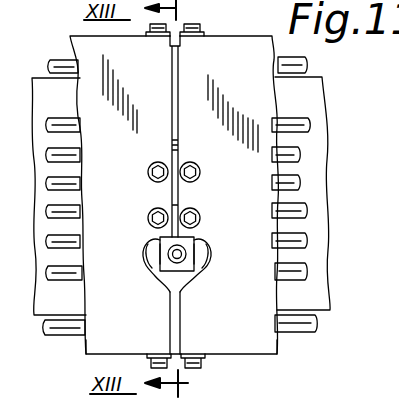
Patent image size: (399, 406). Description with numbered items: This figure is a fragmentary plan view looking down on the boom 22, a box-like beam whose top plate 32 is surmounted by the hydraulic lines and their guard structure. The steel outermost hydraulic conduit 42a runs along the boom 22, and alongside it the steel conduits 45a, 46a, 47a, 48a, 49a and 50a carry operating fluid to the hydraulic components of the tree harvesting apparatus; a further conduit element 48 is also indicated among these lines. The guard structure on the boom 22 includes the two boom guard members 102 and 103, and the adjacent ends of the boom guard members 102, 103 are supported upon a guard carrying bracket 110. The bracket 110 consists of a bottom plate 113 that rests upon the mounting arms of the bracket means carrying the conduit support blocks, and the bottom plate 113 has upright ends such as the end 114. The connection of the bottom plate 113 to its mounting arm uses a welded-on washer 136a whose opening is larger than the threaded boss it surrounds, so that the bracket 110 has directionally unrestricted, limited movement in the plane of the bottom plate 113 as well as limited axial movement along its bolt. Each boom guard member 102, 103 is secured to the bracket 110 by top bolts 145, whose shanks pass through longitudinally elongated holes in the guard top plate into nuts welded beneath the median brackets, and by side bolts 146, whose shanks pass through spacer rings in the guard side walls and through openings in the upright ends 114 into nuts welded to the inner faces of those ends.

The boom 22 is at (42, 78).
The top plate 32 is at (324, 102).
The outermost hydraulic conduit 42a is at (316, 324).
The conduit 45a is at (306, 268).
The conduit 46a is at (306, 238).
The conduit 47a is at (306, 209).
The conduit 48a is at (299, 180).
The conduit 49a is at (299, 152).
The conduit 50a is at (309, 123).
The fin plate 48 is at (391, 19).
The boom guard member 102 is at (88, 358).
The boom guard member 103 is at (280, 346).
The guard carrying bracket 110 is at (201, 281).
The bottom plate 113 is at (196, 250).
The upright end 114 is at (180, 46).
The washer 136a is at (154, 246).
The top bolt 145 is at (148, 218).
The side bolt 146 is at (194, 22).